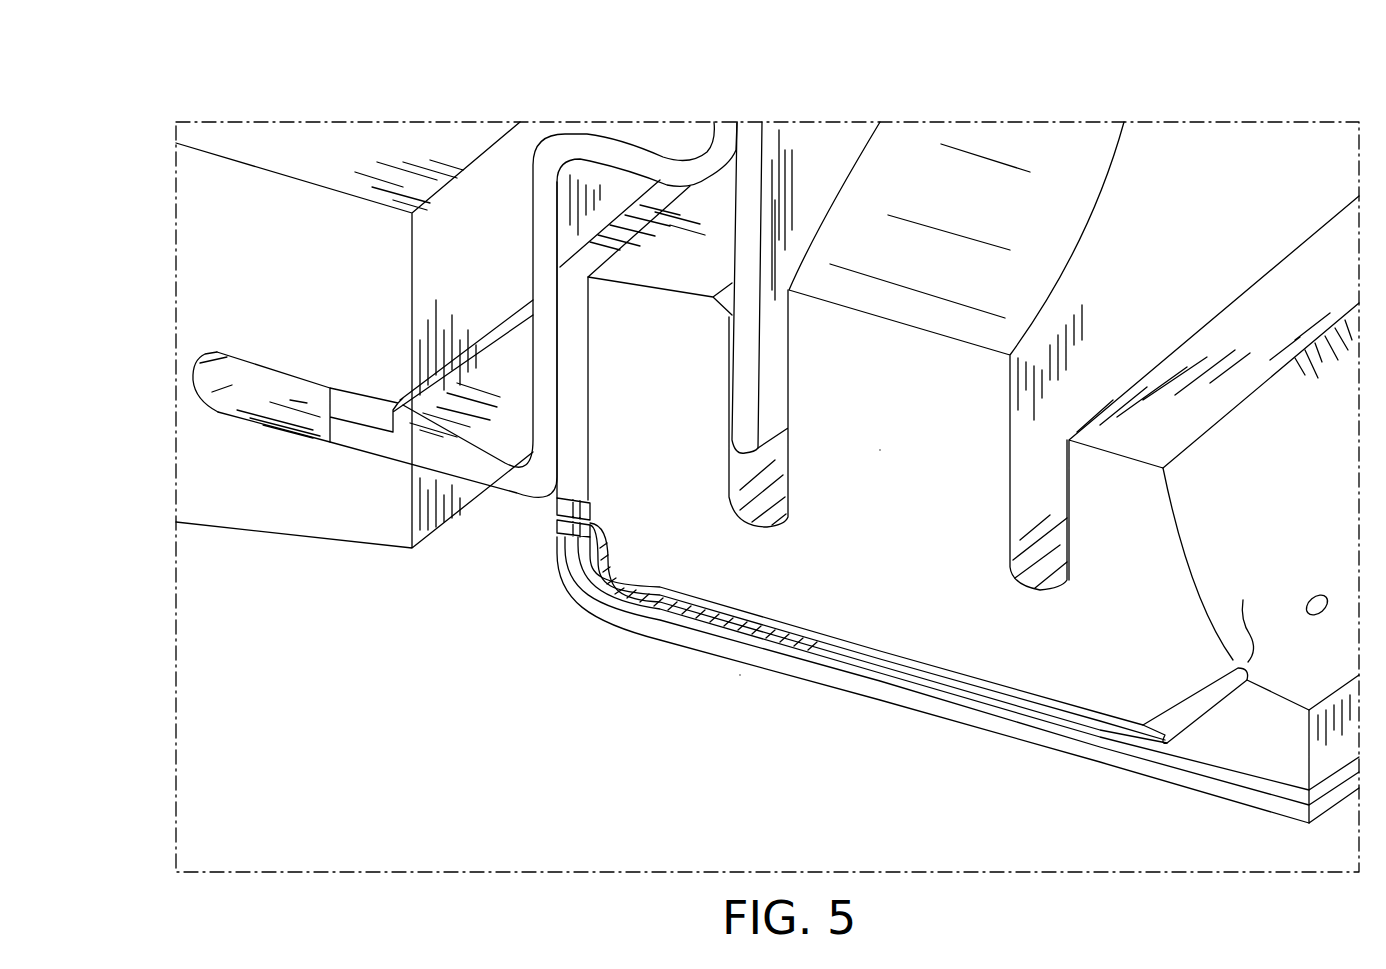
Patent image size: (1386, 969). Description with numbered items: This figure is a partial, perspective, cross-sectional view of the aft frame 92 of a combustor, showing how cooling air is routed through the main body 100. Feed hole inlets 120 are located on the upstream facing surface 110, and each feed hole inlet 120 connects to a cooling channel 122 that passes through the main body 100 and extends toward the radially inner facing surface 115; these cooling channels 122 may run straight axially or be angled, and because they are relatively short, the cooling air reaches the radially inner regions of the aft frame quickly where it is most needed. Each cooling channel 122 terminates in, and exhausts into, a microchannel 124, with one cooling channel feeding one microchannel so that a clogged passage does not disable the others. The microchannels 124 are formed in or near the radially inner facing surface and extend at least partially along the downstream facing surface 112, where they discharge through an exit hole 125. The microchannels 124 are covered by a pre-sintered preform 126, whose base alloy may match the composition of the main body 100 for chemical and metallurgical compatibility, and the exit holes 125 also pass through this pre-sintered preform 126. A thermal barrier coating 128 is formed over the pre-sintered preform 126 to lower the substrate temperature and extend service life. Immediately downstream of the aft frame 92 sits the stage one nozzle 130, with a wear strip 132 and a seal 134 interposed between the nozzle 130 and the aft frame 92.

The aft frame 92 is at (1152, 112).
The main body 100 is at (930, 481).
The upstream facing surface 110 is at (1332, 445).
The downstream facing surface 112 is at (590, 487).
The radially inner facing surface 115 is at (740, 675).
The feed hole inlet 120 is at (1305, 603).
The cooling channel 122 is at (1190, 703).
The microchannel 124 is at (608, 548).
The exit hole 125 is at (560, 520).
The pre-sintered preform 126 is at (1012, 713).
The thermal barrier coating 128 is at (888, 690).
The stage 1 nozzle 130 is at (365, 112).
The wear strip 132 is at (572, 383).
The seal 134 is at (845, 169).